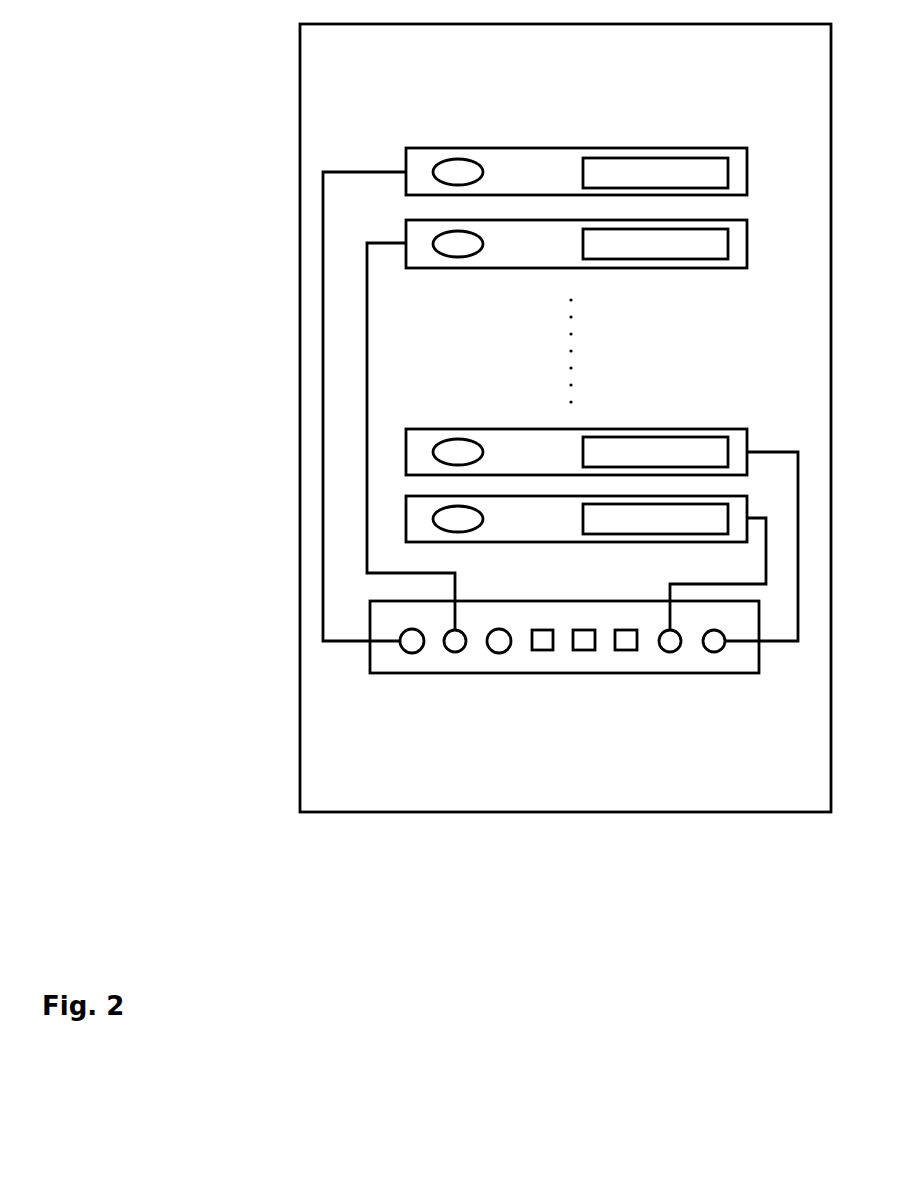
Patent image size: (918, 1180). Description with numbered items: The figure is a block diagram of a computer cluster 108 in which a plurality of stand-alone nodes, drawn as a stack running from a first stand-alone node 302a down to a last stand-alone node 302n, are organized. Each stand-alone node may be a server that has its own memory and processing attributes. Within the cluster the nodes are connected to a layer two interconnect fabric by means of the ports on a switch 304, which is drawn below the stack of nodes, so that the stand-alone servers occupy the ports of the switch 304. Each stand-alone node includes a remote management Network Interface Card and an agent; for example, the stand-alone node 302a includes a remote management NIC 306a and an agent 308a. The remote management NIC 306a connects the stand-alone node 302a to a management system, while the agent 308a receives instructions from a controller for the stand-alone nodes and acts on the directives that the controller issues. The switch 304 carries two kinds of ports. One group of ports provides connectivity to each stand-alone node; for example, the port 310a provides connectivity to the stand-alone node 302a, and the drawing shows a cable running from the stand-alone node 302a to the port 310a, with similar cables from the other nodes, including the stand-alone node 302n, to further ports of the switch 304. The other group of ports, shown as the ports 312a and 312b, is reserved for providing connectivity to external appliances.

The computer cluster 108 is at (250, 831).
The stand-alone node 302a is at (559, 140).
The stand-alone node 302n is at (577, 542).
The switch 304 is at (536, 678).
The remote management NIC 306a is at (656, 158).
The agent 308a is at (458, 158).
The port 310a is at (412, 653).
The port 312a is at (626, 650).
The port 312b is at (584, 650).